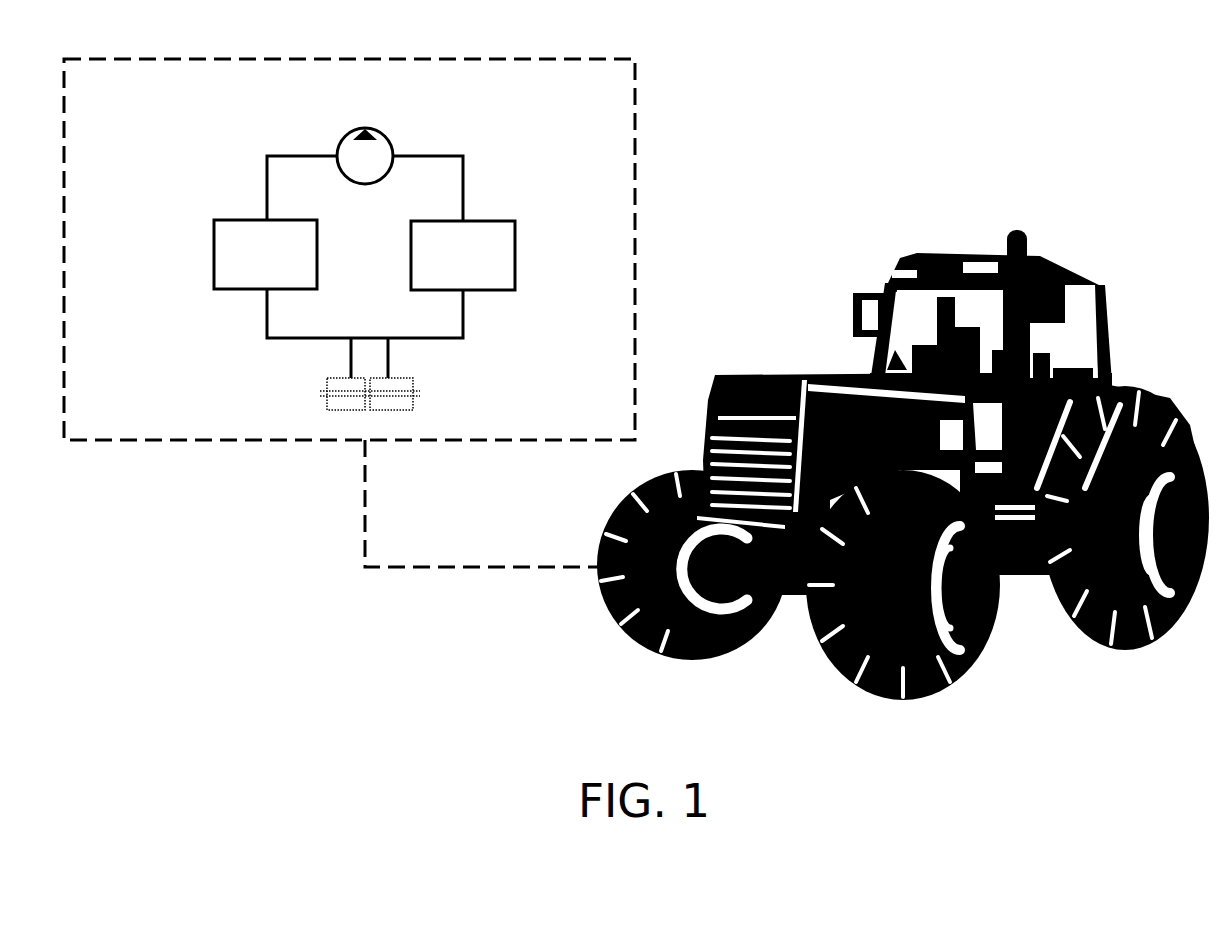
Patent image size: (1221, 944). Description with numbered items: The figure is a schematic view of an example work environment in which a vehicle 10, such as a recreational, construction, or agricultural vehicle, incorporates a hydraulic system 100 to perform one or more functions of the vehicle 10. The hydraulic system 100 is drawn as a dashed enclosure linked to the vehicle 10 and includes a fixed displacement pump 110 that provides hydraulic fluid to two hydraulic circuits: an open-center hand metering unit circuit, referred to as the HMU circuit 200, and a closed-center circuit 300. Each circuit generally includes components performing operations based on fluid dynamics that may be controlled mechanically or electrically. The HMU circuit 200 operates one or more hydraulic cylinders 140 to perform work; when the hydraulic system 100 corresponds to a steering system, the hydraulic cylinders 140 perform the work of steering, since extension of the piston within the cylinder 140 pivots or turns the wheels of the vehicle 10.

The vehicle 10 is at (958, 247).
The hydraulic system 100 is at (438, 59).
The fixed displacement pump 110 is at (387, 137).
The hydraulic cylinder 140 is at (415, 383).
The open-center hand metering unit (HMU) circuit 200 is at (282, 266).
The closed-center circuit 300 is at (480, 266).